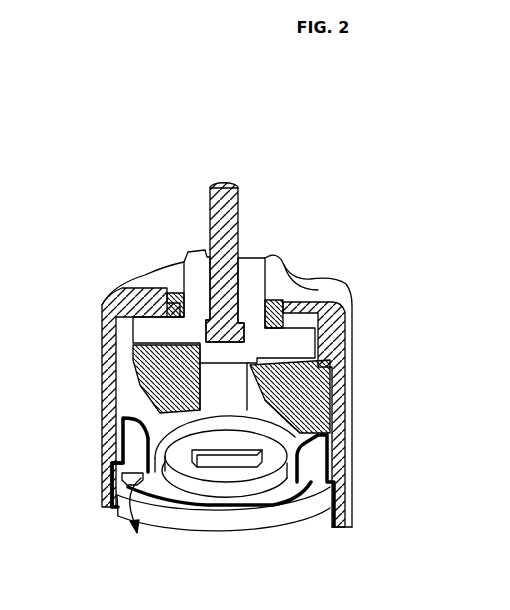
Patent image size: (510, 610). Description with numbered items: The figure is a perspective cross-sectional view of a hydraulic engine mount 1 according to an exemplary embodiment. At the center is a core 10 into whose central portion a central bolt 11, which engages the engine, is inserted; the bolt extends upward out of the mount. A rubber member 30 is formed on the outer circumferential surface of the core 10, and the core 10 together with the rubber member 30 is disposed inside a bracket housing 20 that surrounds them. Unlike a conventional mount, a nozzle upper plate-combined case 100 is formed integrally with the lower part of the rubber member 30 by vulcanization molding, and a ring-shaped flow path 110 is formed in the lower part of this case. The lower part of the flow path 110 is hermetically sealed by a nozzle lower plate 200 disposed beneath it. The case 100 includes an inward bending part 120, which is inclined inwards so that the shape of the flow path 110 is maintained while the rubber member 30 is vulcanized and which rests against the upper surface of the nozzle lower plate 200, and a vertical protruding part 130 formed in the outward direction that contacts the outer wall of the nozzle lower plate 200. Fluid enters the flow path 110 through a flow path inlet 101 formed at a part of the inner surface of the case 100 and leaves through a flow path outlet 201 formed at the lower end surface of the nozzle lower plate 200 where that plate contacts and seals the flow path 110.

The roll rod assembly 1 is at (356, 166).
The core 10 is at (252, 297).
The central bolt 11 is at (241, 212).
The bracket housing 20 is at (343, 334).
The rubber member 30 is at (295, 395).
The nozzle upper plate-combined case 100 is at (137, 443).
The flow path inlet 101 is at (273, 437).
The flow path 110 is at (123, 446).
The inward bending part 120 is at (136, 400).
The vertical protruding part 130 is at (124, 458).
The nozzle lower plate 200 is at (240, 520).
The flow path outlet 201 is at (121, 477).